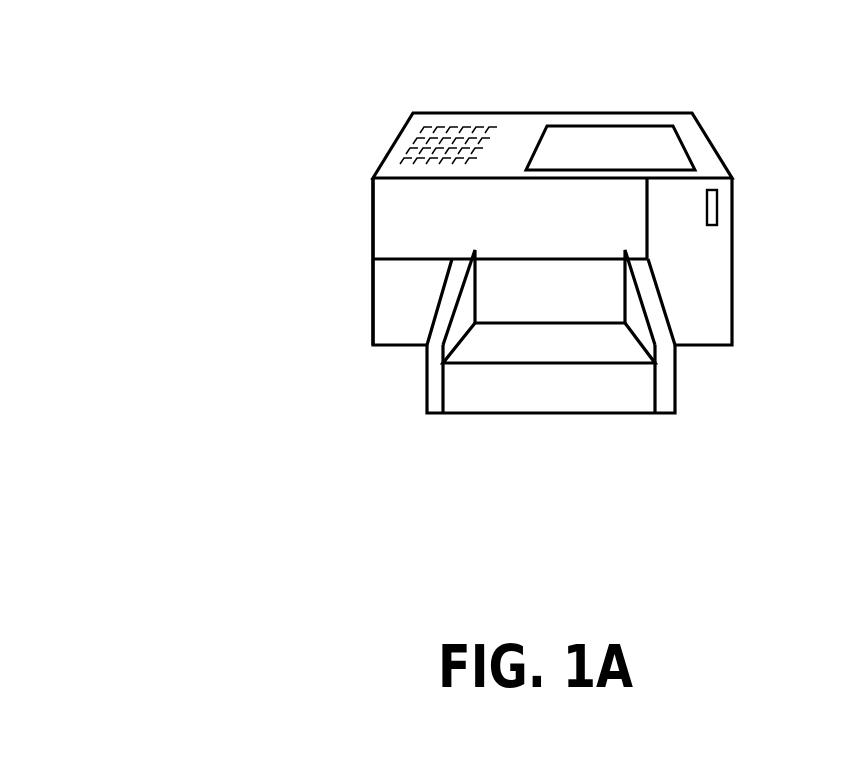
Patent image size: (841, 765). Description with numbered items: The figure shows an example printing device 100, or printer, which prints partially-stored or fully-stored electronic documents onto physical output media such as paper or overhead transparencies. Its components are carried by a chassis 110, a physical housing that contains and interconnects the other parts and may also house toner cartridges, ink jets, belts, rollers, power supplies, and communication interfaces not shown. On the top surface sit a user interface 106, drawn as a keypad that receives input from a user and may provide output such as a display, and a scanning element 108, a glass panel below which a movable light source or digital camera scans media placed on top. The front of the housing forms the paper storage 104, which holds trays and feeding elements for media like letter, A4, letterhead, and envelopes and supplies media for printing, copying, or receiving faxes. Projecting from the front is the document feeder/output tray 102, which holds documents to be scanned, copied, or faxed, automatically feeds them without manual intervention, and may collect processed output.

The printing device 100 is at (192, 143).
The document feeder/output tray 102 is at (427, 385).
The paper storage 104 is at (732, 285).
The user interface 106 is at (410, 142).
The scanning element 108 is at (688, 153).
The chassis 110 is at (372, 225).